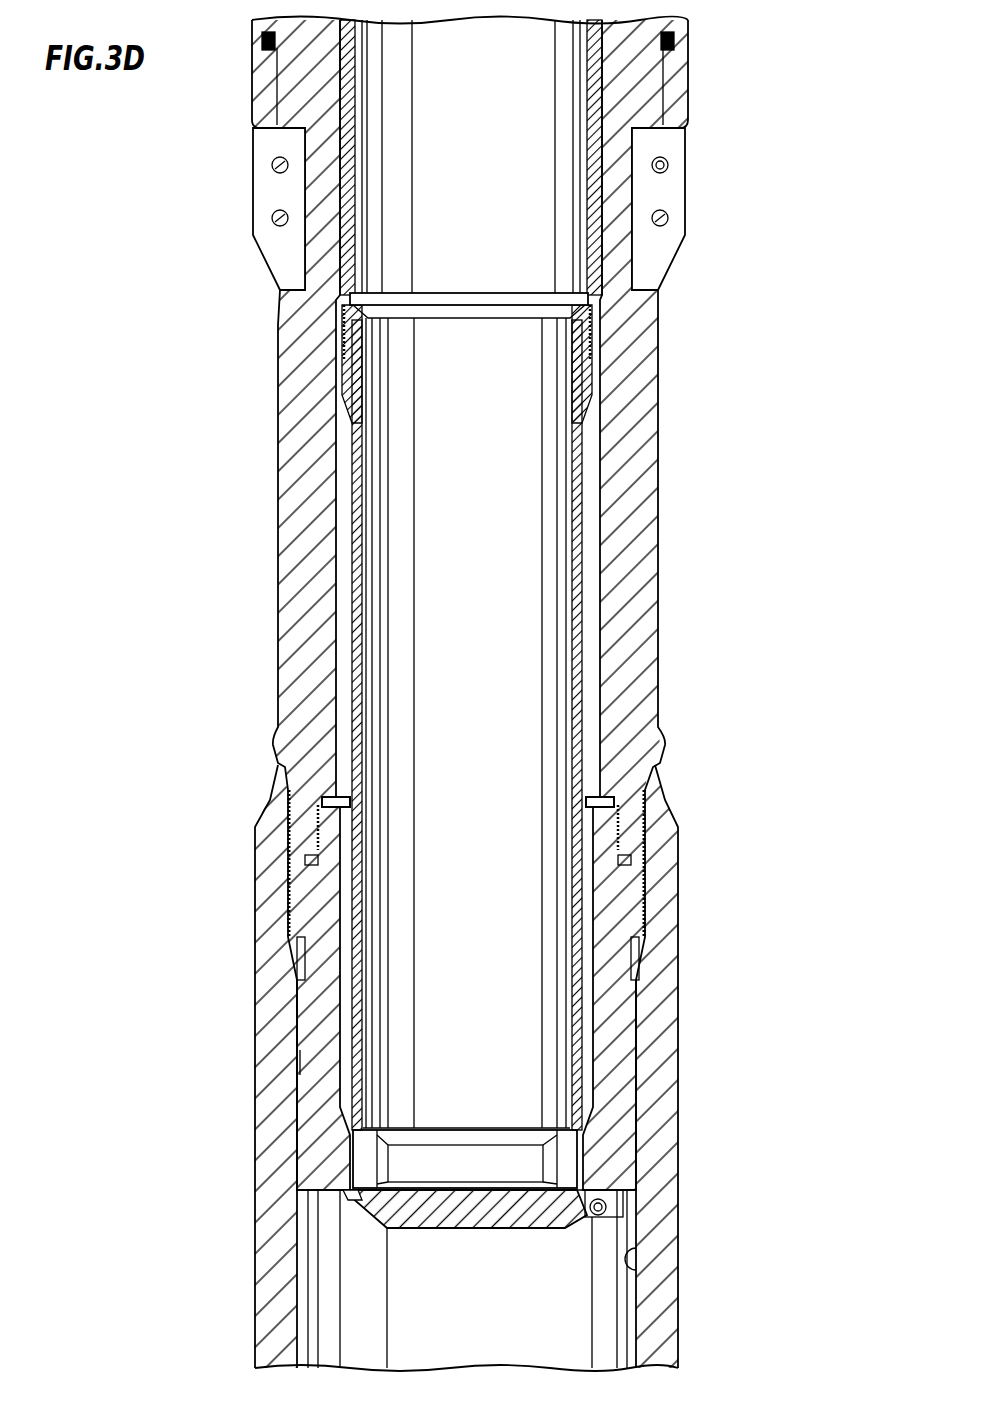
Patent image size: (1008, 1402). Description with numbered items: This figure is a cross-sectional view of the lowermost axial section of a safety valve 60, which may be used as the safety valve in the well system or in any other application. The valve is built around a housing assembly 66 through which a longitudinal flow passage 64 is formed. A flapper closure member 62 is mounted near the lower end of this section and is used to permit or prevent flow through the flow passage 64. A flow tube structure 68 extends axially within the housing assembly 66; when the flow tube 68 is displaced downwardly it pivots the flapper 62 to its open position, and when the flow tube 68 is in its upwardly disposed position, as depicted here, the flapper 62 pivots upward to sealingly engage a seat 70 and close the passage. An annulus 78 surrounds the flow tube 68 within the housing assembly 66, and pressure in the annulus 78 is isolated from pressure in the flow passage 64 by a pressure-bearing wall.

The downhole tool assembly 60 is at (798, 70).
The plate 62 is at (478, 1228).
The port 64 is at (633, 1268).
The lower housing 66 is at (256, 1112).
The inner sleeve 68 is at (350, 612).
The seal 70 is at (345, 1197).
The upper housing 78 is at (670, 571).